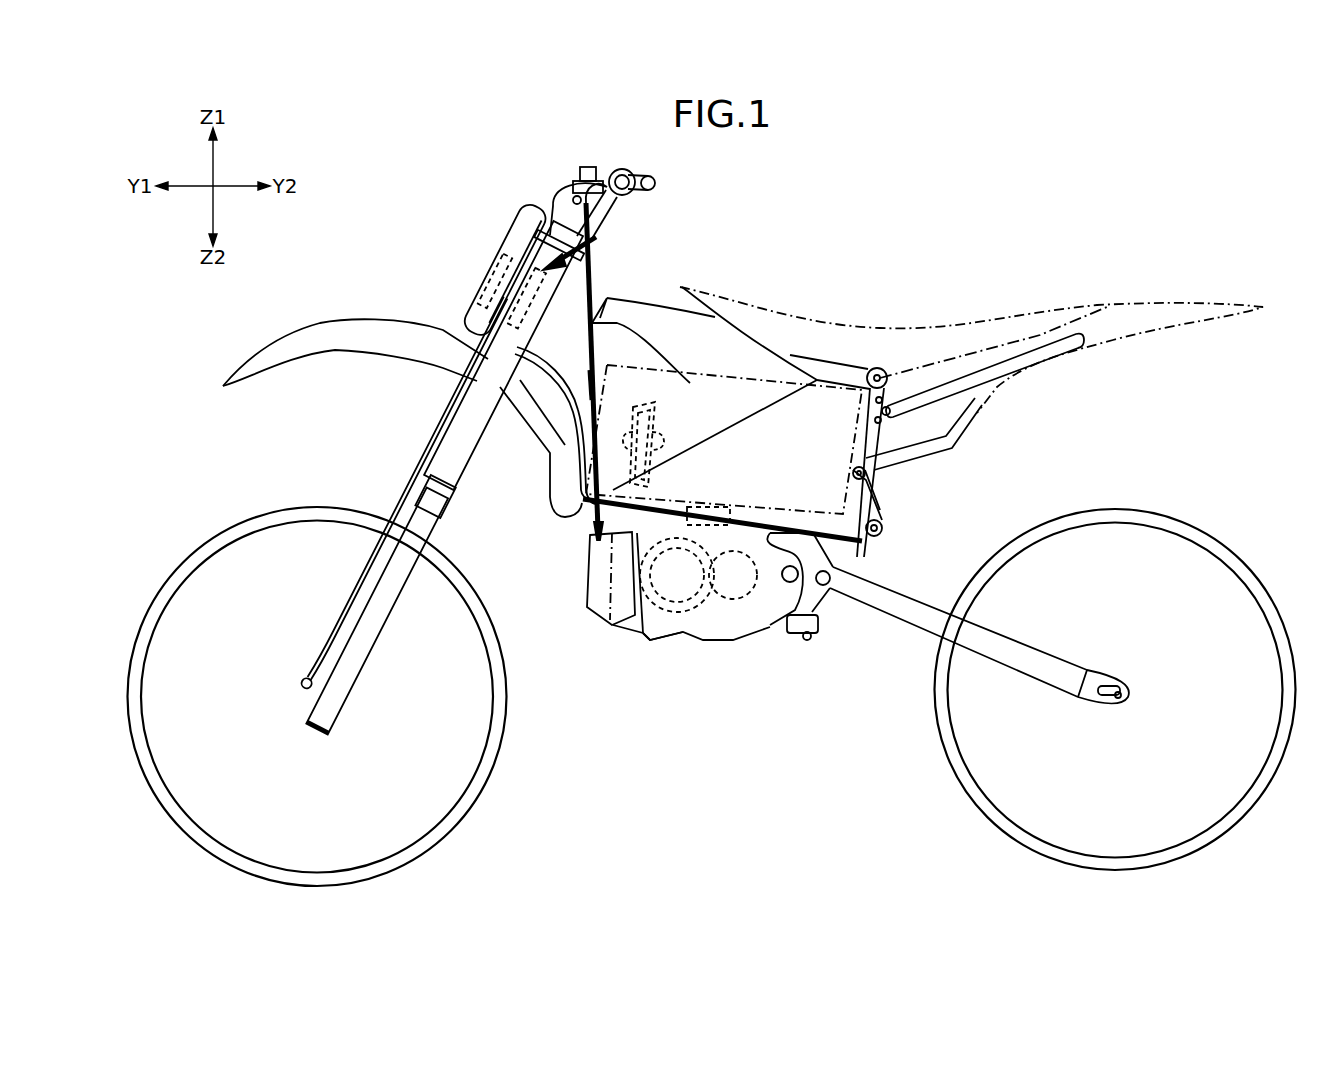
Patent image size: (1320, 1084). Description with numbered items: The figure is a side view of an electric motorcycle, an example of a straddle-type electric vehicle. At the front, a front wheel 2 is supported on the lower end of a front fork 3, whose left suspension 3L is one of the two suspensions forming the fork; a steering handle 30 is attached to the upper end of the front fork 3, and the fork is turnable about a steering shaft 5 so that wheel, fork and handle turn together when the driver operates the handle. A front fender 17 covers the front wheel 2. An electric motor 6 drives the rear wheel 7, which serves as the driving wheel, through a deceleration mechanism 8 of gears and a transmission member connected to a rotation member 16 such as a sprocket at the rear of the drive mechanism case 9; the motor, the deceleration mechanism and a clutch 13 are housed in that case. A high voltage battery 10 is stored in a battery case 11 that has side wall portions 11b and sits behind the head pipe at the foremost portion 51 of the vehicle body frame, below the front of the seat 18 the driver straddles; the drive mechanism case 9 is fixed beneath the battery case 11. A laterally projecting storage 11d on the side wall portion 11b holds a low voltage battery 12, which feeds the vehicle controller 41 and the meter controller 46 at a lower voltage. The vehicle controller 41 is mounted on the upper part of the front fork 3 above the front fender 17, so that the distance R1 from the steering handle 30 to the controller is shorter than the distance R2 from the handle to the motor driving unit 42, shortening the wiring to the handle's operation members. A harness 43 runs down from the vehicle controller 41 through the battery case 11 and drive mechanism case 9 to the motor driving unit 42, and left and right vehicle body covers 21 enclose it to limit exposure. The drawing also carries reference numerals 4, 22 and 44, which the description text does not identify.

The front wheel 2 is at (488, 780).
The front fork 3 is at (398, 604).
The left suspension 3L is at (353, 670).
The controller 4 is at (730, 510).
The steering shaft 5 is at (979, 635).
The electric motor 6 is at (700, 616).
The rear wheel 7 is at (950, 772).
The deceleration mechanism 8 is at (752, 599).
The drive mechanism case 9 is at (646, 641).
The battery 10 is at (641, 366).
The battery case 11 is at (887, 460).
The side wall portion 11b is at (868, 458).
The storage 11d is at (665, 441).
The battery 12 is at (675, 460).
The clutch 13 is at (666, 612).
The rotation member 16 is at (790, 580).
The front fender 17 is at (357, 322).
The seat 18 is at (880, 327).
The vehicle body cover 21 is at (550, 498).
The number plate 22 is at (507, 247).
The steering handle 30 is at (608, 207).
The vehicle controller 41 is at (537, 300).
The motor driving unit 42 is at (618, 630).
The harness 43 is at (565, 408).
The brake hose 44 is at (432, 433).
The meter controller 46 is at (488, 290).
The foremost portion of the vehicle body frame 51 is at (592, 288).
The distance from the steering handle to the vehicle controller R1 is at (560, 236).
The distance from the steering handle to the motor driving unit R2 is at (601, 385).